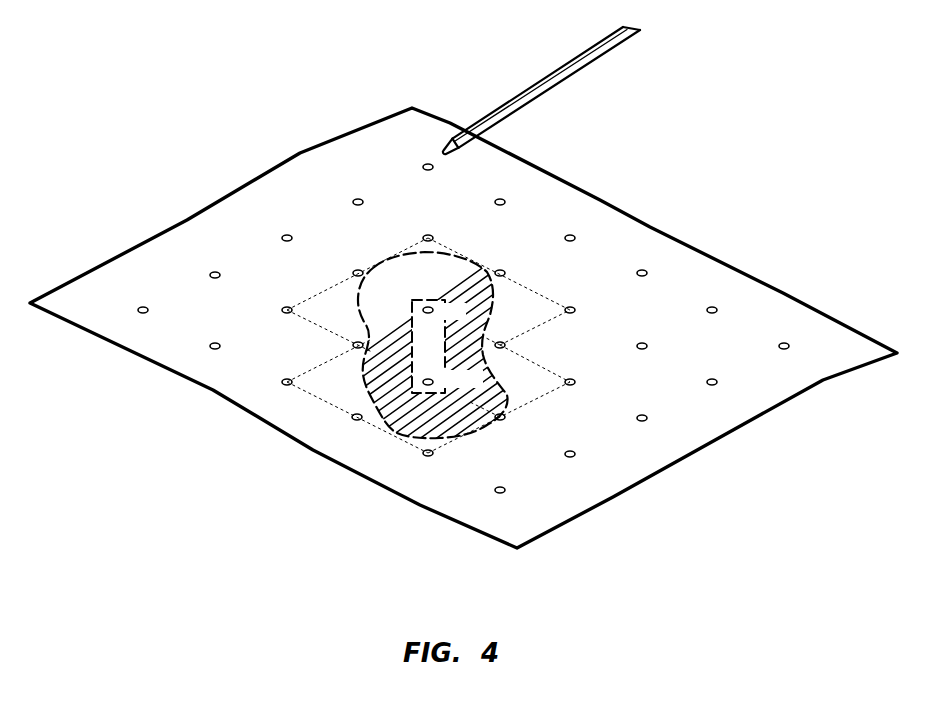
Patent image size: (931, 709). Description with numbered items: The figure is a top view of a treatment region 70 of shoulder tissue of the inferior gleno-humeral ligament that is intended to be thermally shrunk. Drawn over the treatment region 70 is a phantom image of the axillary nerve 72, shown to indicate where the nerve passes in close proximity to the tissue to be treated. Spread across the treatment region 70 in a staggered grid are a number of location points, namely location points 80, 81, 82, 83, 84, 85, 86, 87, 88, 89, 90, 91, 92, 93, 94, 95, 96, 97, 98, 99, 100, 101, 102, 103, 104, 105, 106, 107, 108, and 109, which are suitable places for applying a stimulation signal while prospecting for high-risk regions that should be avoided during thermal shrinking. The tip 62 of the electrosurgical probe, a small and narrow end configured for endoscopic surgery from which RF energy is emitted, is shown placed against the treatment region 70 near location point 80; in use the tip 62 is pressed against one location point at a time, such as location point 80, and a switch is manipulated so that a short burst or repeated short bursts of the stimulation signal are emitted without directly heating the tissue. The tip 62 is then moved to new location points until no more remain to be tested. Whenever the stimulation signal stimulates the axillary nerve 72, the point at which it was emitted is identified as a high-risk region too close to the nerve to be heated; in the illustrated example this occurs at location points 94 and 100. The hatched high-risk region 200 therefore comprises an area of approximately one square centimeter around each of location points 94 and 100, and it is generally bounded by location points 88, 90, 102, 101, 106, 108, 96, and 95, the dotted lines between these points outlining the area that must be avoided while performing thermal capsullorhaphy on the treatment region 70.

The treatment region 70 is at (398, 138).
The tip 62 is at (452, 156).
The axillary nerve 72 is at (398, 368).
The high-risk region 200 is at (345, 310).
The location point 80 is at (446, 175).
The location point 81 is at (516, 203).
The location point 82 is at (586, 239).
The location point 83 is at (657, 275).
The location point 84 is at (727, 311).
The location point 85 is at (799, 348).
The location point 86 is at (728, 383).
The location point 87 is at (658, 348).
The location point 88 is at (586, 311).
The location point 89 is at (516, 274).
The location point 90 is at (443, 226).
The location point 91 is at (374, 203).
The location point 92 is at (302, 241).
The location point 93 is at (358, 259).
The location point 94 is at (444, 311).
The location point 95 is at (519, 347).
The location point 96 is at (585, 384).
The location point 97 is at (657, 420).
The location point 98 is at (586, 456).
The location point 99 is at (514, 424).
The location point 100 is at (453, 379).
The location point 101 is at (330, 346).
The location point 102 is at (266, 309).
The location point 103 is at (239, 275).
The location point 104 is at (167, 313).
The location point 105 is at (193, 346).
The location point 106 is at (280, 394).
The location point 107 is at (353, 430).
The location point 108 is at (449, 463).
The location point 109 is at (522, 496).